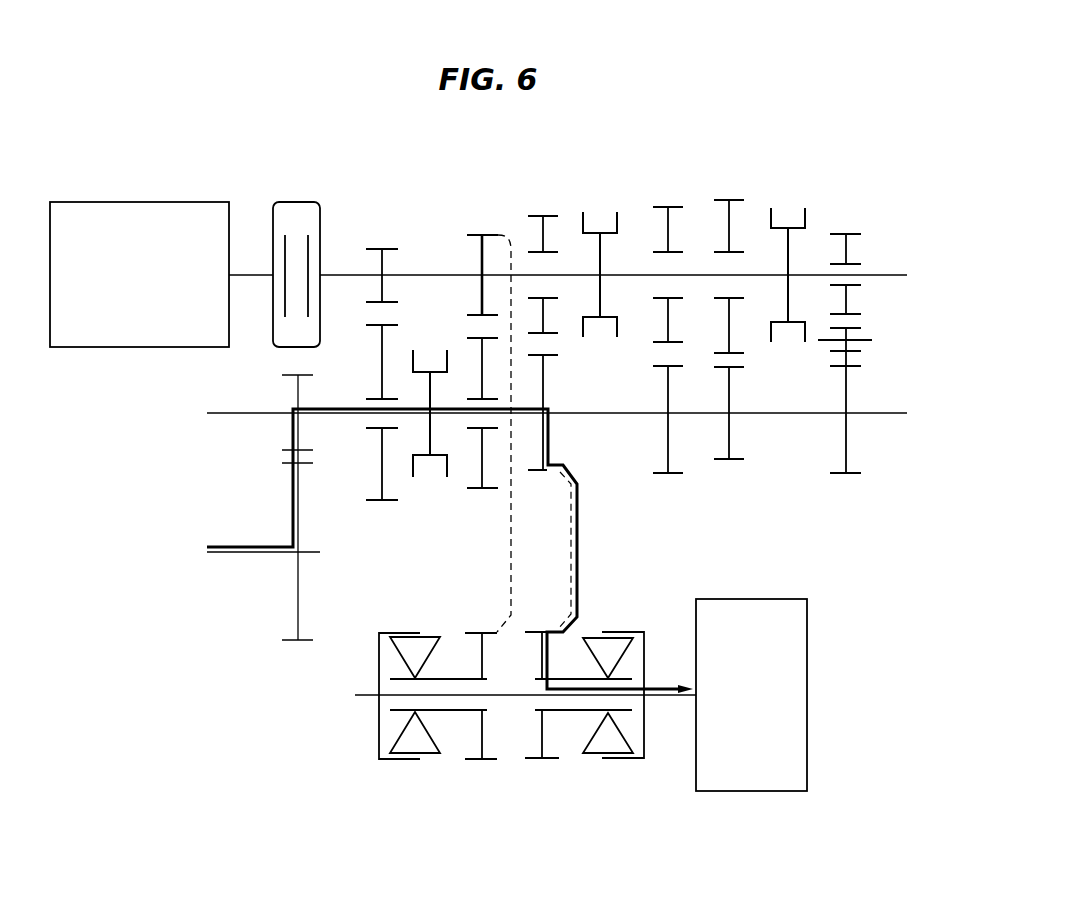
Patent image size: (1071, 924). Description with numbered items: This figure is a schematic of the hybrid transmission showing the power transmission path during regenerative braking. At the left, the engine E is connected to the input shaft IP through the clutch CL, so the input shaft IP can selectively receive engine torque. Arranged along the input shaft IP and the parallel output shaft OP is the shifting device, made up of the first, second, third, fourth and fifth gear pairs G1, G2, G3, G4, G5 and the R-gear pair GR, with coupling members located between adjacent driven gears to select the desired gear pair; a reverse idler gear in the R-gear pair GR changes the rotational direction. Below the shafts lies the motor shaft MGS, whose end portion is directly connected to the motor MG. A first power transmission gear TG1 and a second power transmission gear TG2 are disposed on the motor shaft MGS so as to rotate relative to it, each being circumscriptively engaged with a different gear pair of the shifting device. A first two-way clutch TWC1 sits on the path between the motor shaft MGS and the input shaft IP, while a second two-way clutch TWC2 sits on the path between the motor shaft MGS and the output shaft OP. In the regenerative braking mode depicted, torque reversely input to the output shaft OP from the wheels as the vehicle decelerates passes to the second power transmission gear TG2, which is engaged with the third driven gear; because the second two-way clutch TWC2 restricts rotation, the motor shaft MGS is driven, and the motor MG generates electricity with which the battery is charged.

The engine E is at (139, 274).
The clutch CL is at (297, 202).
The input shaft IP is at (888, 275).
The output shaft OP is at (888, 413).
The first gear pair G1 is at (382, 361).
The second gear pair G2 is at (482, 348).
The third gear pair G3 is at (543, 331).
The fourth gear pair G4 is at (668, 327).
The fifth gear pair G5 is at (729, 316).
The R-gear pair GR is at (845, 341).
The first two-way clutch TWC1 is at (430, 760).
The second two-way clutch TWC2 is at (597, 757).
The first power transmission gear TG1 is at (488, 760).
The second power transmission gear TG2 is at (552, 762).
The motor shaft MGS is at (660, 697).
The motor MG is at (751, 695).